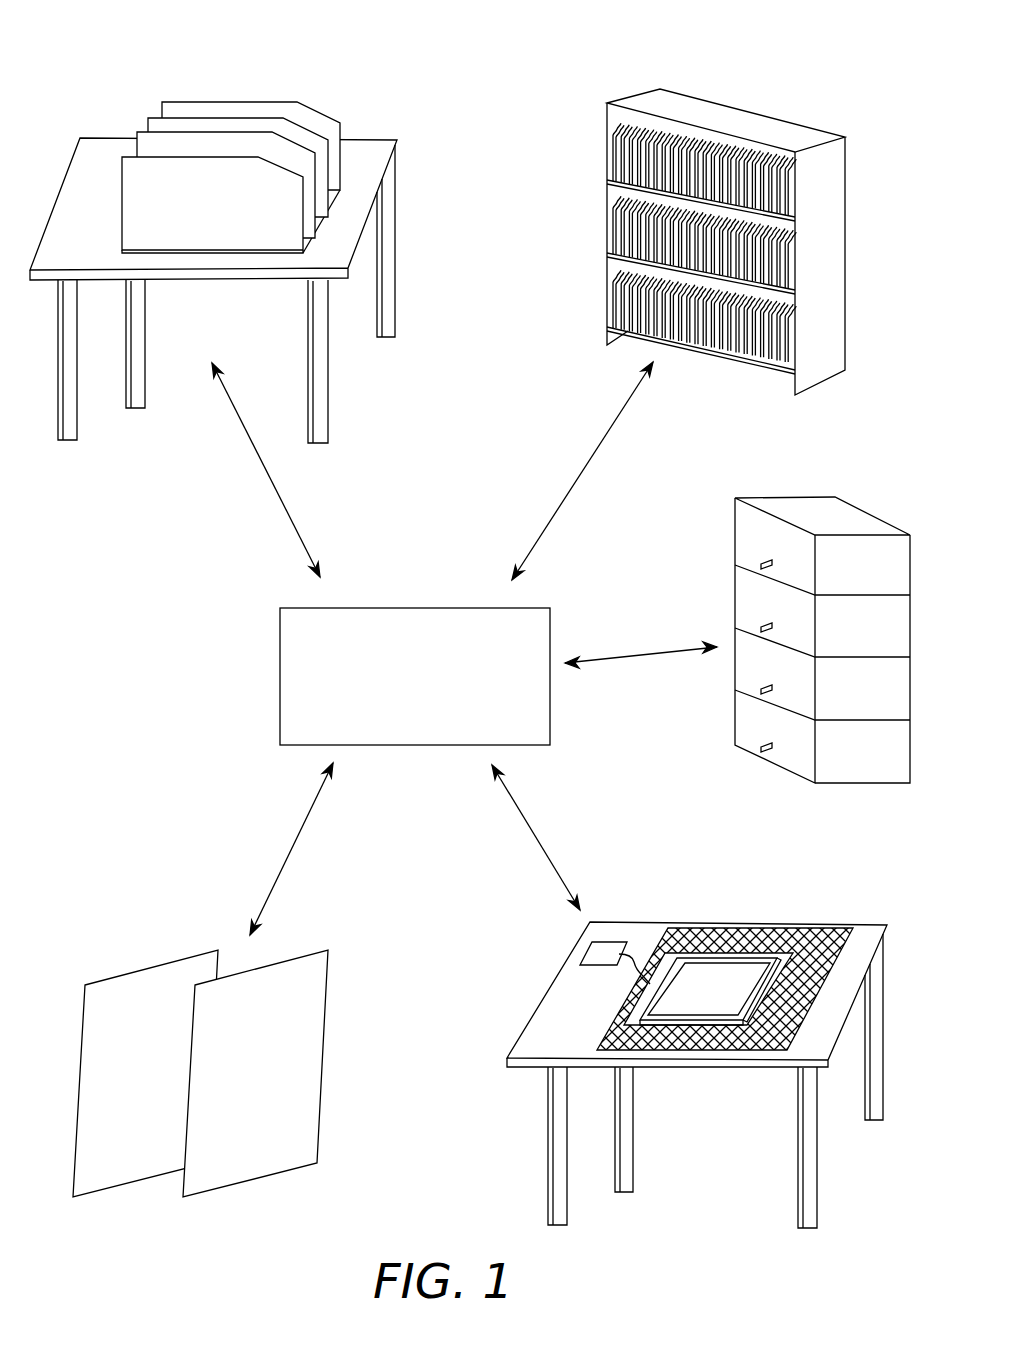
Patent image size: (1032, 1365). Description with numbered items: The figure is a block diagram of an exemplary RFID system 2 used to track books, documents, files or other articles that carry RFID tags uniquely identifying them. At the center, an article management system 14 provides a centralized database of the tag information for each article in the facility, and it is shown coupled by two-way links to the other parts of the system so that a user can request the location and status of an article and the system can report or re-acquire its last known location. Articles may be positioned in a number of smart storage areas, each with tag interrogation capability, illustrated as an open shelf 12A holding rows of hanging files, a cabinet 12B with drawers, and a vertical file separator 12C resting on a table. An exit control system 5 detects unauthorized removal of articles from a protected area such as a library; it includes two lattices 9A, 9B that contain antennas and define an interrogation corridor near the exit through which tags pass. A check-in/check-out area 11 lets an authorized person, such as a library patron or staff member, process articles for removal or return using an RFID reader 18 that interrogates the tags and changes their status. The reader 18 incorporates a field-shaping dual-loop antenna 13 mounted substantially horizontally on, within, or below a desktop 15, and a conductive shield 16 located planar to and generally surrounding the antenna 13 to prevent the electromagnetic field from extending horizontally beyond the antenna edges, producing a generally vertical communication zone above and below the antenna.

The RFID system 2 is at (518, 62).
The article management system 14 is at (400, 735).
The vertical file separator 12C is at (135, 185).
The open shelf 12A is at (822, 216).
The cabinet 12B is at (803, 512).
The exit control system 5 is at (244, 1054).
The lattice 9A is at (132, 968).
The lattice 9B is at (300, 953).
The check-in/check-out area 11 is at (722, 1027).
The desktop 15 is at (862, 932).
The conductive shield 16 is at (720, 938).
The dual-loop antenna 13 is at (762, 988).
The RFID reader 18 is at (605, 952).